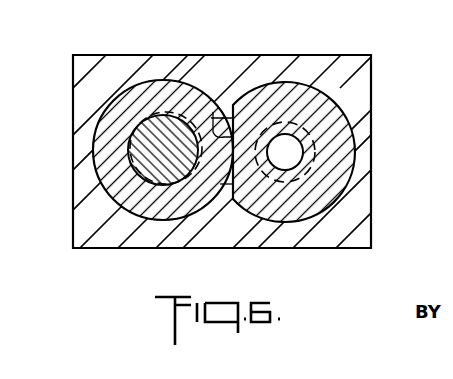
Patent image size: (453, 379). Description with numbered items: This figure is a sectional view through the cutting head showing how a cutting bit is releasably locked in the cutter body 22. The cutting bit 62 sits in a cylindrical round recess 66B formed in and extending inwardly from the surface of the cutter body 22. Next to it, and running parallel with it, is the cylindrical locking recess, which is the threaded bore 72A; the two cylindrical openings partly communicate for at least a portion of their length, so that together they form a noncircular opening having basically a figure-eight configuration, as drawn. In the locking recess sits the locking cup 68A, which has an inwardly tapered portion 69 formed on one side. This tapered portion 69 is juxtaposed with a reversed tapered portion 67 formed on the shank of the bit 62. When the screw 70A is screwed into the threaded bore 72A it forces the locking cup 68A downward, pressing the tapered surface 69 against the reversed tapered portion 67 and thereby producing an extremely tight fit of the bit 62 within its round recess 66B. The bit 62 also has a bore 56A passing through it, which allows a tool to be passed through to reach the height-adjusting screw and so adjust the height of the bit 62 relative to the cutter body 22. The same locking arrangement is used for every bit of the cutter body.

The cutter body 22 is at (372, 62).
The cutting bit 62 is at (345, 128).
The round recess 66B is at (350, 170).
The locking cup 68A is at (100, 137).
The screw 70A is at (167, 113).
The inwardly tapered portion 69 is at (213, 112).
The reversed tapered portion 67 is at (222, 186).
The bore 56A is at (279, 160).
The threaded bore 72A is at (140, 188).